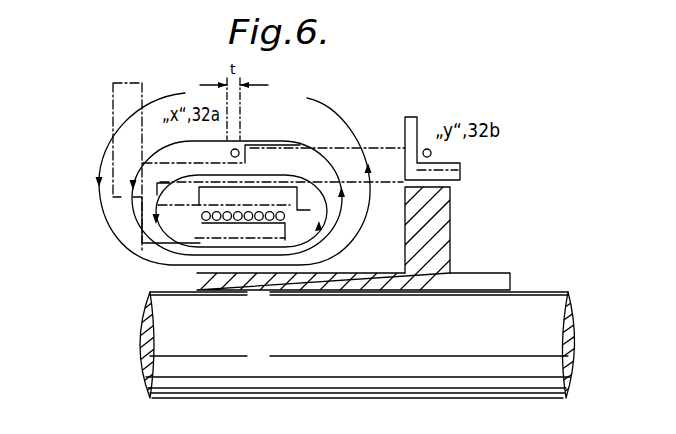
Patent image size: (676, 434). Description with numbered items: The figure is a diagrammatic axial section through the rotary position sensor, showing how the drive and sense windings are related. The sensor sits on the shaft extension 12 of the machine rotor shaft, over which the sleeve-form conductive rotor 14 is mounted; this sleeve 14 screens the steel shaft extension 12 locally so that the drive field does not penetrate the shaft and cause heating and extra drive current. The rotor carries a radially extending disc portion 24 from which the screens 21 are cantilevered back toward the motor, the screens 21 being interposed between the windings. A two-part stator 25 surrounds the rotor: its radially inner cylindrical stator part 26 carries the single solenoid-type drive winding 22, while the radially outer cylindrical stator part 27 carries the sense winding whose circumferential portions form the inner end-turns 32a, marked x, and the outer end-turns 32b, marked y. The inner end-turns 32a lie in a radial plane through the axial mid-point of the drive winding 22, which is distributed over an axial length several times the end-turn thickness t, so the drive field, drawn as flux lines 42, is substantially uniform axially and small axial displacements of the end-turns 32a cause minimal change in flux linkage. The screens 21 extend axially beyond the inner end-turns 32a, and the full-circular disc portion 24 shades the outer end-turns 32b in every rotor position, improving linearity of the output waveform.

The shaft extension 12 is at (287, 344).
The conductive rotor sleeve 14 is at (332, 283).
The screens 21 is at (302, 205).
The drive winding 22 is at (211, 216).
The disc portion 24 is at (432, 240).
The two-part stator 25 is at (80, 162).
The inner cylindrical stator part 26 is at (130, 200).
The outer cylindrical stator part 27 is at (152, 173).
The inner end-turns 32a is at (230, 152).
The outer end-turns 32b is at (443, 138).
The flux lines 42 is at (135, 222).